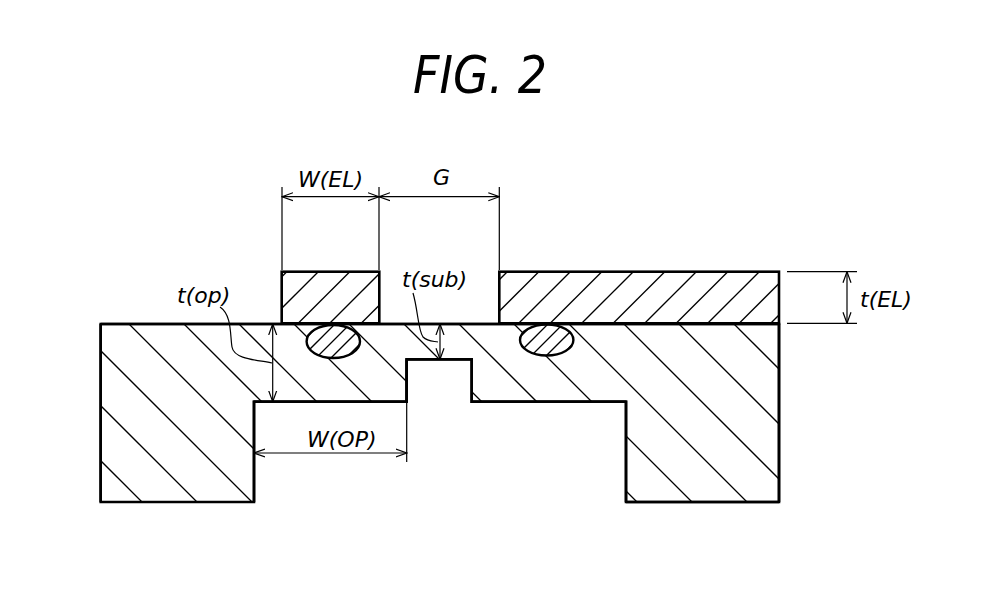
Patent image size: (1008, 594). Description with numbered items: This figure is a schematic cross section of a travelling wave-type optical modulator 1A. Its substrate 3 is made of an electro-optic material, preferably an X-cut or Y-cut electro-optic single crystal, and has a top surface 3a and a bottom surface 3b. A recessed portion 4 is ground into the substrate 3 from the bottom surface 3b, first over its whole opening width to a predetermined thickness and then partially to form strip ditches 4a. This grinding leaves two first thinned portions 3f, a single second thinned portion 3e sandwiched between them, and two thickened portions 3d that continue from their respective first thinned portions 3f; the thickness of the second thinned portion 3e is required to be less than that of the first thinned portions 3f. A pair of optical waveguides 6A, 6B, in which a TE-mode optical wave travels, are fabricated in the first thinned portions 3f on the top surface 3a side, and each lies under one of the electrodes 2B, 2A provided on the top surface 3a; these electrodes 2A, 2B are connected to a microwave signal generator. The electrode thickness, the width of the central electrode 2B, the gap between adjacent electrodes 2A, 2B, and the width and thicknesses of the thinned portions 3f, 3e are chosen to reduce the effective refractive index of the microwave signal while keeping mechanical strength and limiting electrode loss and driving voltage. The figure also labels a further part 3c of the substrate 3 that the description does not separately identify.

The travelling wave-type optical modulator 1A is at (692, 240).
The electrode 2A is at (723, 295).
The central electrode 2B is at (310, 282).
The substrate 3 is at (725, 450).
The top surface 3a is at (648, 313).
The bottom surface 3b is at (710, 502).
The side surface of substrate 3c is at (779, 407).
The thickened portion 3d is at (162, 468).
The second thinned portion 3e is at (453, 352).
The first thinned portion 3f is at (313, 373).
The recessed portion 4 is at (525, 430).
The strip ditch 4a is at (408, 390).
The optical waveguide 6A is at (337, 337).
The optical waveguide 6B is at (548, 340).